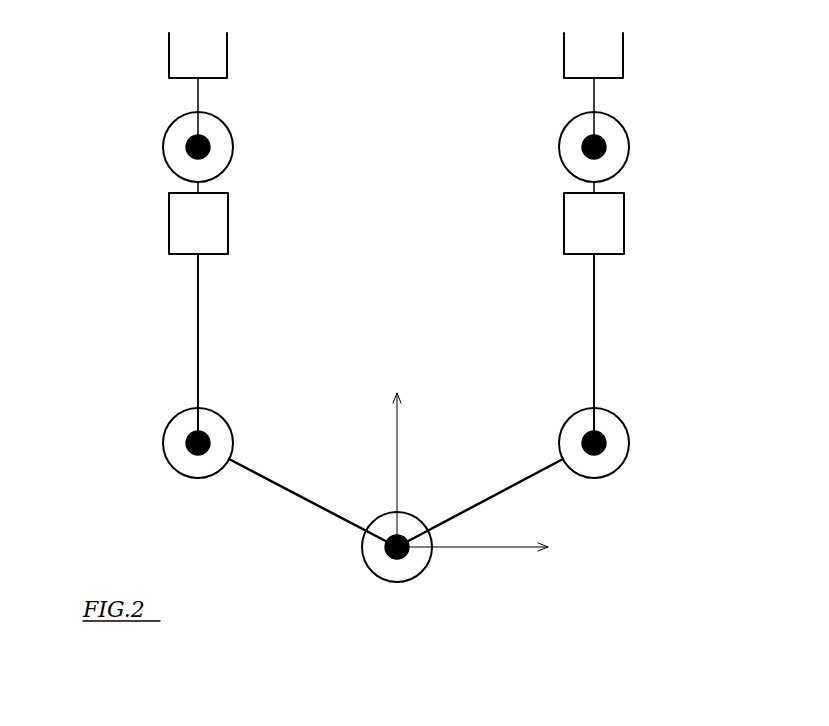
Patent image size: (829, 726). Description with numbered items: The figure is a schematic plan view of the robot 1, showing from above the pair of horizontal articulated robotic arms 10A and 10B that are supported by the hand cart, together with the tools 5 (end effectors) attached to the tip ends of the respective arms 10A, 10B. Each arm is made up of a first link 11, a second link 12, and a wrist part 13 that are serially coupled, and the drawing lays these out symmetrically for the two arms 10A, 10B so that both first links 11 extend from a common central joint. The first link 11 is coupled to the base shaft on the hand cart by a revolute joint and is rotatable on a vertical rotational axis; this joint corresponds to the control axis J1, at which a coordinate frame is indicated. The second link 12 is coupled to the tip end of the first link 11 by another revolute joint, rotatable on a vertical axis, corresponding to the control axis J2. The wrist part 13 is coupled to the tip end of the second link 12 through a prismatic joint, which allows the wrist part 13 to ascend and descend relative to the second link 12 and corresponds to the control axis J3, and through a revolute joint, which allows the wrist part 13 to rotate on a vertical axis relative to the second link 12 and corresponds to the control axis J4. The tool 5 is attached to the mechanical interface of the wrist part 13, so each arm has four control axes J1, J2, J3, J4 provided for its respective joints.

The robot 1 is at (631, 546).
The tool 5 is at (169, 56).
The robotic arm 10A is at (674, 333).
The robotic arm 10B is at (118, 334).
The first link 11 is at (272, 484).
The second link 12 is at (197, 340).
The wrist part 13 is at (148, 207).
The control axis J1 is at (420, 578).
The control axis J2 is at (168, 465).
The control axis J3 is at (169, 247).
The control axis J4 is at (164, 147).